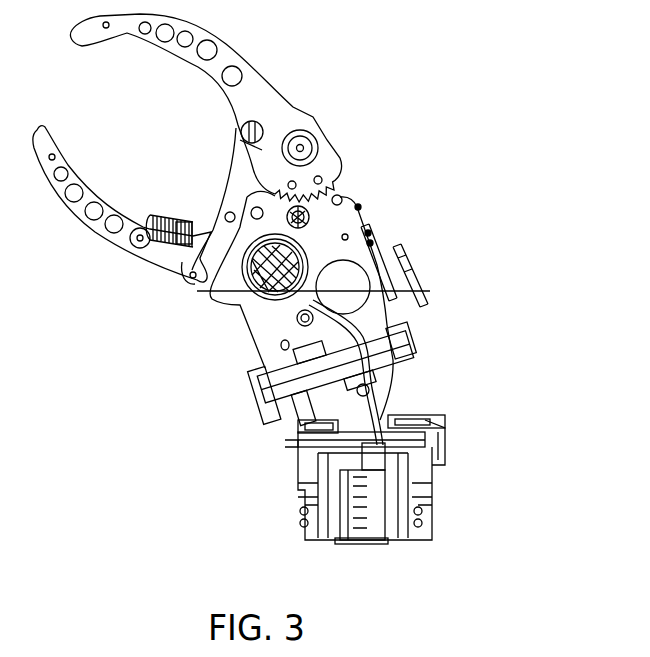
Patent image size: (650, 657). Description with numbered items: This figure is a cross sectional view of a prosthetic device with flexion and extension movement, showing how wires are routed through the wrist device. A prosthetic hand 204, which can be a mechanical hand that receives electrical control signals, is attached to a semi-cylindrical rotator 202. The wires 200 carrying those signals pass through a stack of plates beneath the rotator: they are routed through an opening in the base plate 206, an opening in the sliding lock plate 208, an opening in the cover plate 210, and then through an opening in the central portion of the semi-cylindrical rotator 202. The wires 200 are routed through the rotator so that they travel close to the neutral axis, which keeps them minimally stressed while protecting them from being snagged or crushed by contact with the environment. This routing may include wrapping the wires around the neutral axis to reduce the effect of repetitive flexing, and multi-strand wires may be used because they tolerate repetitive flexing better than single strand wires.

The wires 200 is at (415, 321).
The semi-cylindrical rotator 202 is at (403, 366).
The prosthetic hand 204 is at (333, 153).
The base plate 206 is at (300, 448).
The sliding lock plate 208 is at (445, 465).
The cover plate 210 is at (423, 417).